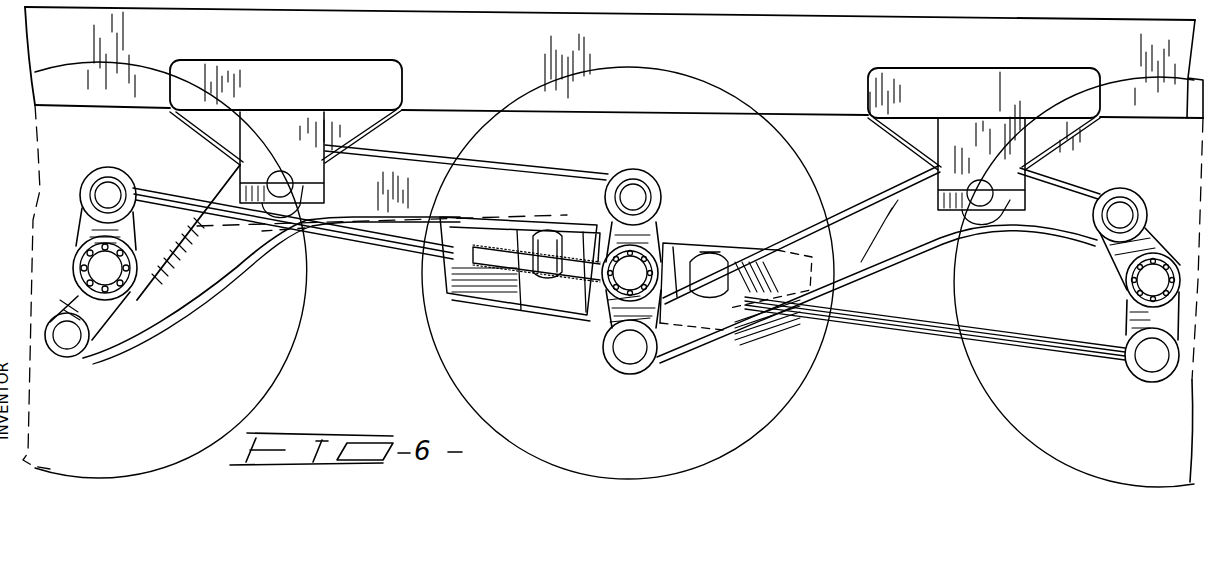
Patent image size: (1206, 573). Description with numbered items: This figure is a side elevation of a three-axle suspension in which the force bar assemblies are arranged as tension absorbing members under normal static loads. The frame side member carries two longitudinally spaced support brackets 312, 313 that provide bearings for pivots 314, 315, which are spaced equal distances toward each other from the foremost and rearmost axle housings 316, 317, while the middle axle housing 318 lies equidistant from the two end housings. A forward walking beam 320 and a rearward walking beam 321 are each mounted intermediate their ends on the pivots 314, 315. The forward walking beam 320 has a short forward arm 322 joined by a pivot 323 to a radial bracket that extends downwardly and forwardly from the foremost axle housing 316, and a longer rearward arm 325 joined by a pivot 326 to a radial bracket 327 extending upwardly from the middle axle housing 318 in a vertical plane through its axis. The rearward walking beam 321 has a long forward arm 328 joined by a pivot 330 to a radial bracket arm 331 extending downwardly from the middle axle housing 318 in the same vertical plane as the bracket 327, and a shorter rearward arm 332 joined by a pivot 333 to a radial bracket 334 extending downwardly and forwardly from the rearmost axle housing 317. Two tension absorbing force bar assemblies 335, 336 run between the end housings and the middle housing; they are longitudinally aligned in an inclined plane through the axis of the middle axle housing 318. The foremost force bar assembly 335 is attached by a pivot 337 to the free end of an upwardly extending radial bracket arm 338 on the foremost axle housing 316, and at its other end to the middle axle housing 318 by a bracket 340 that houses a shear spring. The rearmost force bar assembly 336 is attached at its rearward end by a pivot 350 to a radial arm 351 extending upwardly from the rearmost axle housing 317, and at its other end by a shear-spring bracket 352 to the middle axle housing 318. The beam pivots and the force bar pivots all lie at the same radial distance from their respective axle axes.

The support bracket 312 is at (384, 130).
The support bracket 313 is at (900, 127).
The pivot 314 is at (279, 210).
The pivot 315 is at (968, 196).
The foremost axle housing 316 is at (90, 278).
The rearmost axle housing 317 is at (1152, 256).
The middle axle housing 318 is at (655, 250).
The forward walking beam 320 is at (440, 148).
The rearward walking beam 321 is at (225, 268).
The short forward arm 322 is at (70, 342).
The pivot 323 is at (68, 298).
The longer rearward arm 325 is at (495, 177).
The pivot 326 is at (640, 195).
The radial bracket 327 is at (641, 283).
The long forward arm 328 is at (800, 240).
The pivot 330 is at (634, 352).
The radial bracket arm 331 is at (607, 315).
The shorter rearward arm 332 is at (1094, 190).
The pivot 333 is at (1122, 214).
The radial bracket 334 is at (1128, 282).
The foremost force bar assembly 335 is at (407, 271).
The rearmost force bar assembly 336 is at (888, 337).
The pivot 337 is at (112, 198).
The radial bracket arm 338 is at (84, 212).
The bracket 340 is at (503, 292).
The pivot 350 is at (1148, 357).
The radial arm 351 is at (1133, 317).
The bracket 352 is at (765, 332).